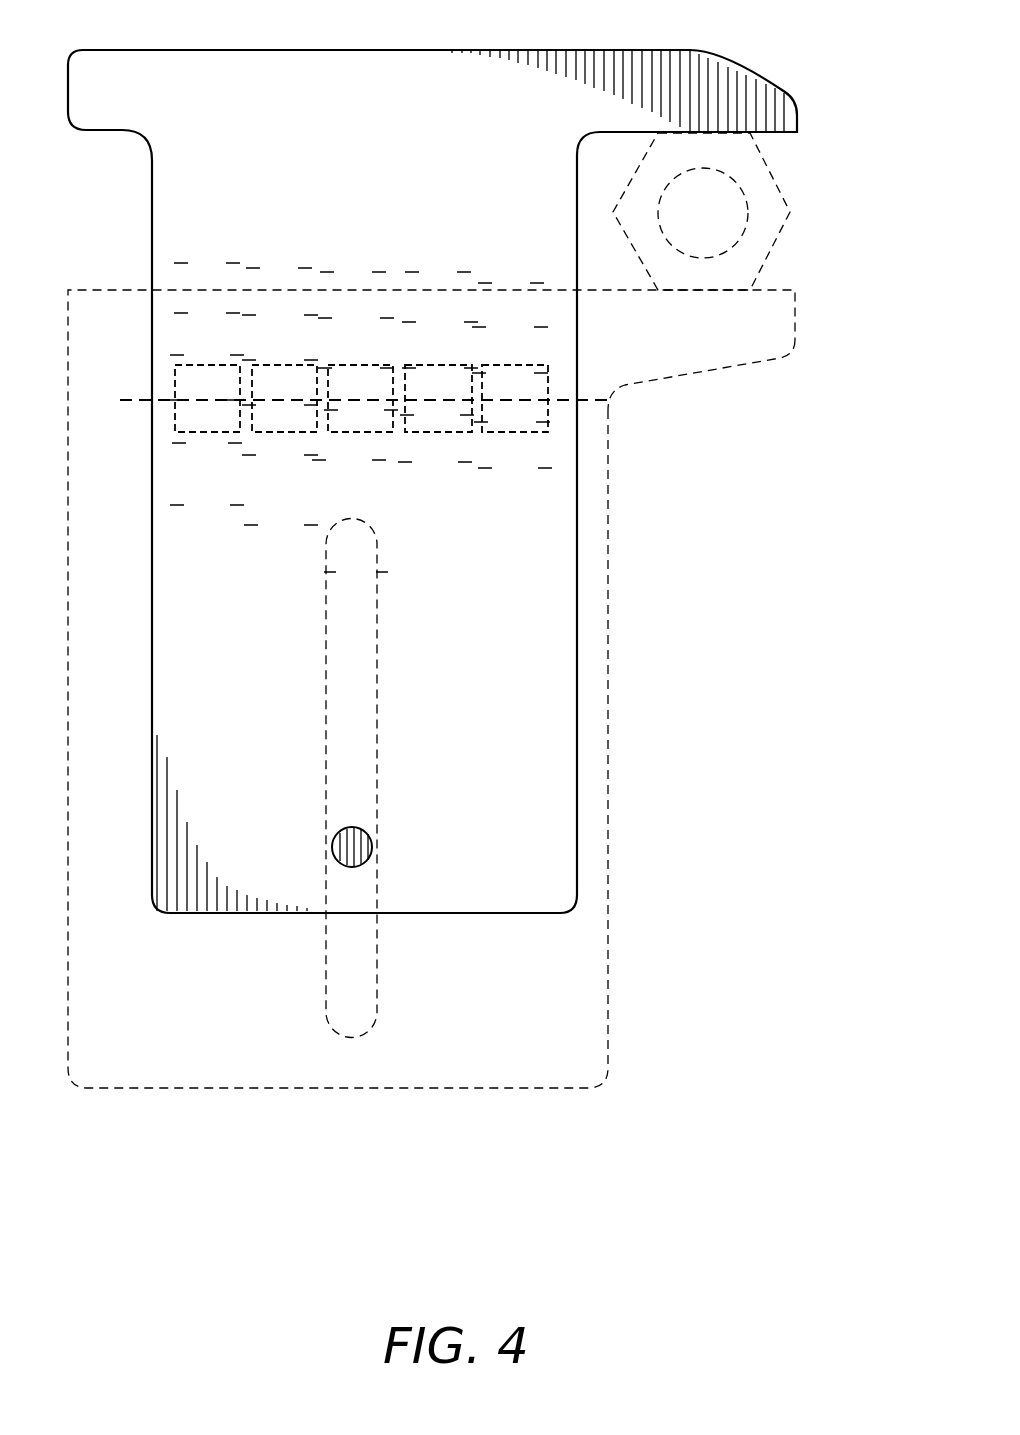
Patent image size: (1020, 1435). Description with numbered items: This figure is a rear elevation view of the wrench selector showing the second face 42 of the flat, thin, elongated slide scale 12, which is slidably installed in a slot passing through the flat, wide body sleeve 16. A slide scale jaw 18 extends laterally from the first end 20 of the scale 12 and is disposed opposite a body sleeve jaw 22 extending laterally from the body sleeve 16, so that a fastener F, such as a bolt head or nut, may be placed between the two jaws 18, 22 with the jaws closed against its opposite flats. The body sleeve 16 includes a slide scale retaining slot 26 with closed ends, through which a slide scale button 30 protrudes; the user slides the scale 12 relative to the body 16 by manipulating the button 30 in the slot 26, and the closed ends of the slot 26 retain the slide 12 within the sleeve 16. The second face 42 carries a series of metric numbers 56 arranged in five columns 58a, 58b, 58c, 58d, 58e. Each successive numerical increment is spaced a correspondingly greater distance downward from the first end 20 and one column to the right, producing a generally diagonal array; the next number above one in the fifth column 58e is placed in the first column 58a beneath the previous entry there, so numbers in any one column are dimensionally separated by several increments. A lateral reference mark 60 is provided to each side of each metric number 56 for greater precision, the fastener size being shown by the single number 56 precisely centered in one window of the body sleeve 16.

The slide scale 12 is at (577, 718).
The first end 20 is at (390, 48).
The slide scale jaw 18 is at (742, 58).
The second face 42 is at (196, 678).
The body sleeve 16 is at (612, 838).
The body sleeve jaw 22 is at (760, 362).
The fastener F is at (782, 228).
The slide scale retaining slot 26 is at (362, 722).
The slide scale button 30 is at (372, 838).
The first column 58a is at (207, 248).
The second column 58b is at (283, 250).
The third column 58c is at (358, 252).
The fourth column 58d is at (443, 252).
The fifth column 58e is at (512, 263).
The lateral reference mark 60 is at (410, 465).
The metric numbers 56 is at (270, 566).